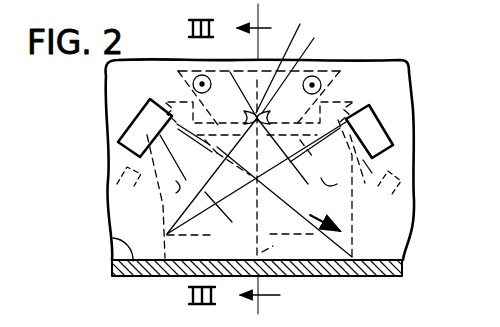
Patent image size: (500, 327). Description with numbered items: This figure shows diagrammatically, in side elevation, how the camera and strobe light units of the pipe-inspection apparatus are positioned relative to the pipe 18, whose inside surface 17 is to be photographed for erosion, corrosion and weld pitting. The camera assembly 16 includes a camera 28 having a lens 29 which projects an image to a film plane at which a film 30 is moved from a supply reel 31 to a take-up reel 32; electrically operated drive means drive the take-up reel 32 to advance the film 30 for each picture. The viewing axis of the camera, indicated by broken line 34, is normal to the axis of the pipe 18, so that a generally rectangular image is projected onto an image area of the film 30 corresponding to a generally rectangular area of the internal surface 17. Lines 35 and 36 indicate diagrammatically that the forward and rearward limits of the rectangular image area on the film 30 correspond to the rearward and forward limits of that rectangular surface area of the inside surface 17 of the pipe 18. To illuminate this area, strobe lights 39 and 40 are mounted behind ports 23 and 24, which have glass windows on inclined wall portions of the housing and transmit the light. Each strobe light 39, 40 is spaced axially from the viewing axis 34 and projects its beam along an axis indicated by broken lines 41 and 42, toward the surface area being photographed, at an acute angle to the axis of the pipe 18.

The camera assembly 16 is at (178, 88).
The inside surface 17 is at (115, 242).
The pipe 18 is at (403, 262).
The port 23 is at (387, 190).
The port 24 is at (136, 183).
The camera 28 is at (308, 67).
The lens 29 is at (283, 76).
The film 30 is at (290, 61).
The supply reel 31 is at (204, 82).
The take-up reel 32 is at (321, 87).
The viewing axis 34 is at (275, 250).
The line 35 is at (338, 219).
The line 36 is at (185, 210).
The strobe light 39 is at (392, 126).
The strobe light 40 is at (140, 125).
The broken line 41 is at (341, 174).
The broken line 42 is at (166, 181).